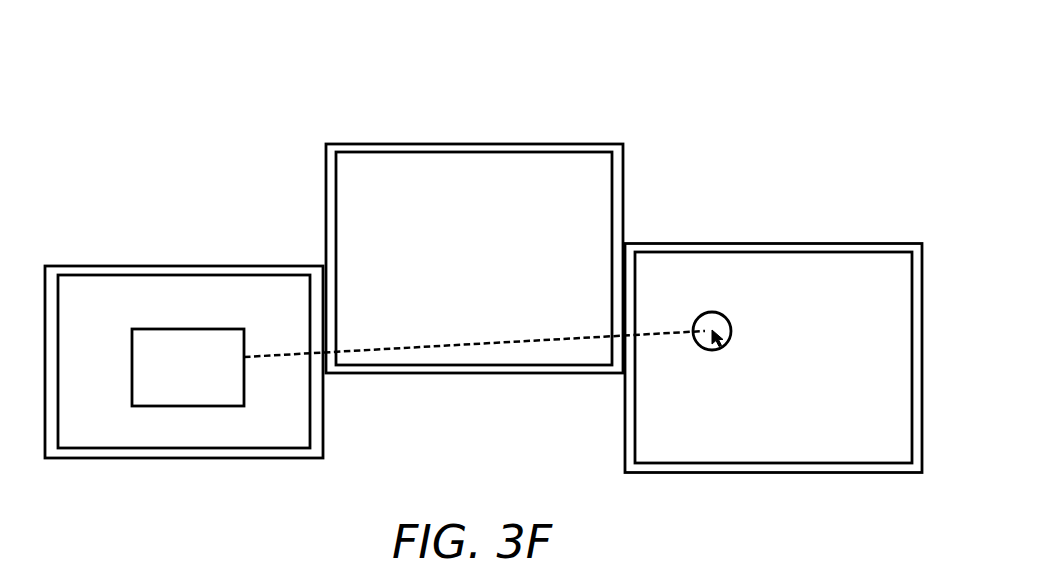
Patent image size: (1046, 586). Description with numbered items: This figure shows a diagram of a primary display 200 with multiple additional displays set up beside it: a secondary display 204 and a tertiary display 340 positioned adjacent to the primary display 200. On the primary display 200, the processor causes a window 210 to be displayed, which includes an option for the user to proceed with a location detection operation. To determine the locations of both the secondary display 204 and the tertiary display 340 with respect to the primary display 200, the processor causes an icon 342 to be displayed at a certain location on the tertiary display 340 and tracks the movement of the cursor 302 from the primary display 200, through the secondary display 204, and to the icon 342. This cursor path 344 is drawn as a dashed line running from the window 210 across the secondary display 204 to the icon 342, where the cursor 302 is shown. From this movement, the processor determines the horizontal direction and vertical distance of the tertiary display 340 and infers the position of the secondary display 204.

The primary display 200 is at (173, 265).
The window 210 is at (132, 372).
The secondary display 204 is at (460, 143).
The tertiary display 340 is at (737, 247).
The icon 342 is at (730, 317).
The cursor 302 is at (720, 345).
The cursor movement path 344 is at (477, 345).